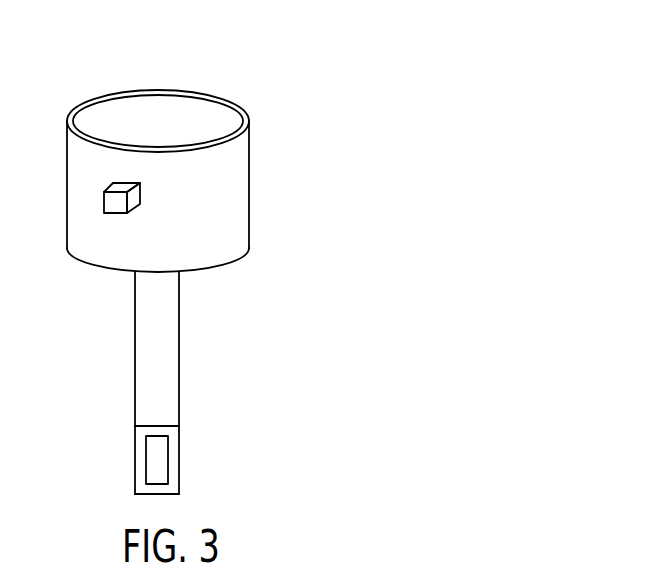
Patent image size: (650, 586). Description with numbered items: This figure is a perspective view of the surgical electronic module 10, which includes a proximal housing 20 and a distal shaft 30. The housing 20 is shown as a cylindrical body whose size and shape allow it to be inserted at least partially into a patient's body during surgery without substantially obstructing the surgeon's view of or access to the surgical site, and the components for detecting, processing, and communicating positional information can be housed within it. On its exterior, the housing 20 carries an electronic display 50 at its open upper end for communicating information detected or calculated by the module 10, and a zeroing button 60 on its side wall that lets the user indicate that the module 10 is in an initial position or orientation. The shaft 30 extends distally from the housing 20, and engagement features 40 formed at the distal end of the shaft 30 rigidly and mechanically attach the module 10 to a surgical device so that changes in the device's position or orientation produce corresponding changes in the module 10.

The surgical electronic module 10 is at (307, 72).
The proximal housing 20 is at (237, 187).
The distal shaft 30 is at (167, 363).
The engagement features 40 is at (160, 463).
The electronic display 50 is at (197, 112).
The zeroing button 60 is at (109, 200).